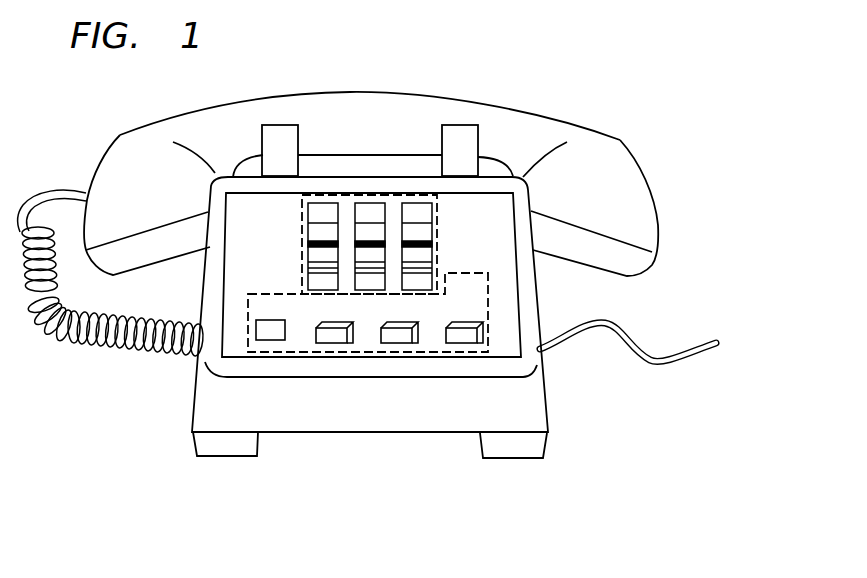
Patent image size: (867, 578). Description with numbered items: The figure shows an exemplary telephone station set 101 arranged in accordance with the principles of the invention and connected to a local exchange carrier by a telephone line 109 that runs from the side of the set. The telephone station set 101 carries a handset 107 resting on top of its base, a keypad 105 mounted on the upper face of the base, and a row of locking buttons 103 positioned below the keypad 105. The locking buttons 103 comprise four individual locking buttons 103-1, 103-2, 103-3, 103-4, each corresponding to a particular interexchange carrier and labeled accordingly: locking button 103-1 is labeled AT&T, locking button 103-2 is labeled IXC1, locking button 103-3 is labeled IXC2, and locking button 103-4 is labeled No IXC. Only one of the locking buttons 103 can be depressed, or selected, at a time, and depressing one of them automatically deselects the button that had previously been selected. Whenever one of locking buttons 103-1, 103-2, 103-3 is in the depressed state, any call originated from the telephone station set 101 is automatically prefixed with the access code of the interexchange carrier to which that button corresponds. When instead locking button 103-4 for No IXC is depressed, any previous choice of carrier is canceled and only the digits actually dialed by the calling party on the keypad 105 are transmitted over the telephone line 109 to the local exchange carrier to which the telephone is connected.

The telephone station set 101 is at (547, 409).
The locking buttons 103 is at (274, 292).
The locking button 103-1 is at (270, 341).
The locking button 103-2 is at (340, 332).
The locking button 103-3 is at (405, 332).
The locking button 103-4 is at (465, 332).
The keypad 105 is at (440, 231).
The handset 107 is at (445, 97).
The telephone line 109 is at (716, 342).